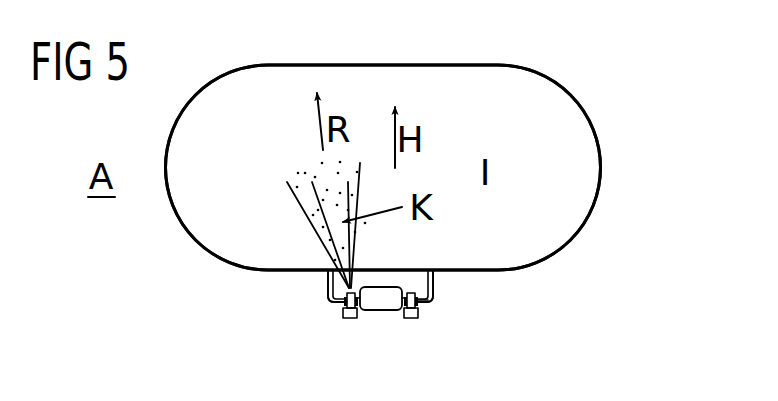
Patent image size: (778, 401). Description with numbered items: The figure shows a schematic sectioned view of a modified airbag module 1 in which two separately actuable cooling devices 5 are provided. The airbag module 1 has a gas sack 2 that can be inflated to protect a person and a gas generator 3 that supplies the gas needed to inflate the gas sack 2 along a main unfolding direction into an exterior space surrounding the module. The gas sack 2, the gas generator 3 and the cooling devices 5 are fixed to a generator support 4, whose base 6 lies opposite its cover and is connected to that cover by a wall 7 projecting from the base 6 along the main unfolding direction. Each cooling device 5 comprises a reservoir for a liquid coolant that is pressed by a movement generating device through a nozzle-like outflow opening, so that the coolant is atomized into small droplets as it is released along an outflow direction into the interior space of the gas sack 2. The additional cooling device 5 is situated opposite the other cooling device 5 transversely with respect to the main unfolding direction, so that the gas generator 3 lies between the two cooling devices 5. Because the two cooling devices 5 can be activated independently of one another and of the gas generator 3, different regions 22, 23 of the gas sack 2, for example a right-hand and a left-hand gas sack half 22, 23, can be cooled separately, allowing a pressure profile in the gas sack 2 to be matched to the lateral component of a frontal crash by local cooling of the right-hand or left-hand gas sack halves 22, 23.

The airbag module 1 is at (150, 288).
The gas sack 2 is at (458, 65).
The gas generator 3 is at (382, 298).
The generator support 4 is at (427, 302).
The cooling device 5 is at (350, 318).
The base 6 is at (423, 305).
The wall 7 is at (328, 290).
The right-hand gas sack half 22 is at (285, 97).
The left-hand gas sack half 23 is at (543, 137).